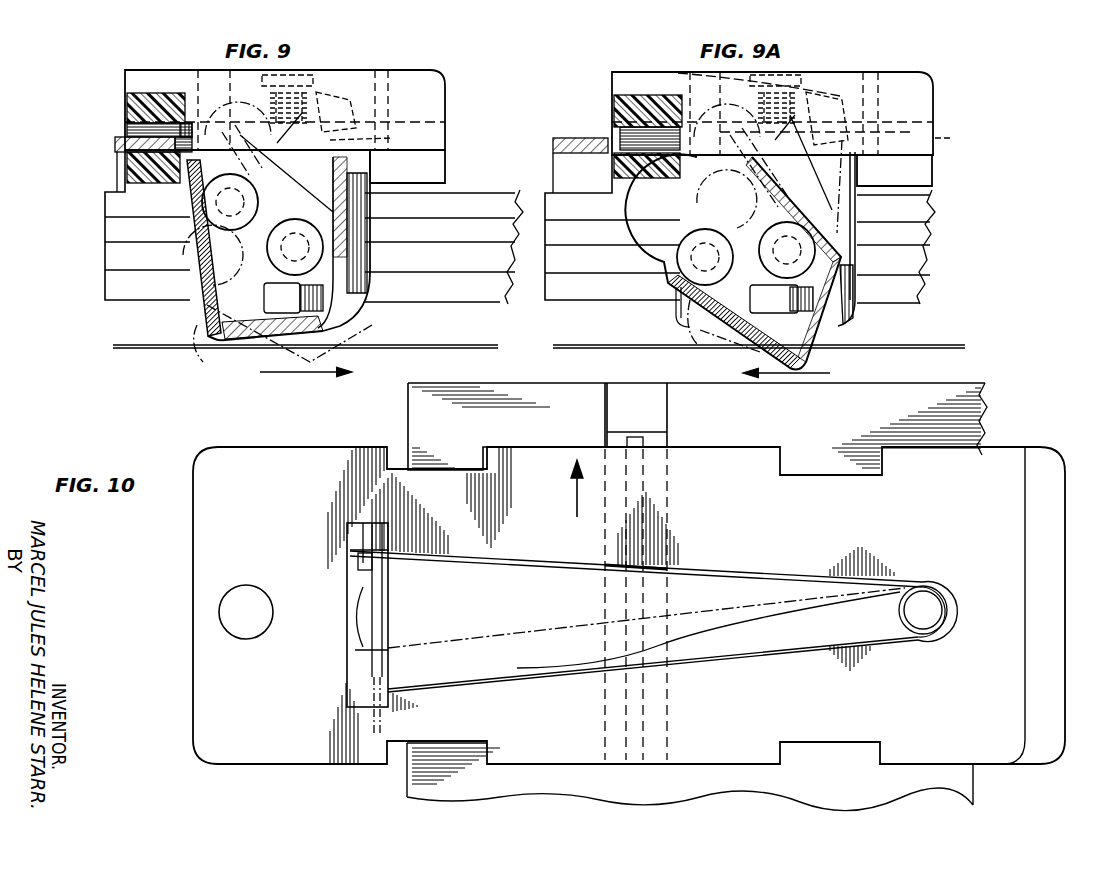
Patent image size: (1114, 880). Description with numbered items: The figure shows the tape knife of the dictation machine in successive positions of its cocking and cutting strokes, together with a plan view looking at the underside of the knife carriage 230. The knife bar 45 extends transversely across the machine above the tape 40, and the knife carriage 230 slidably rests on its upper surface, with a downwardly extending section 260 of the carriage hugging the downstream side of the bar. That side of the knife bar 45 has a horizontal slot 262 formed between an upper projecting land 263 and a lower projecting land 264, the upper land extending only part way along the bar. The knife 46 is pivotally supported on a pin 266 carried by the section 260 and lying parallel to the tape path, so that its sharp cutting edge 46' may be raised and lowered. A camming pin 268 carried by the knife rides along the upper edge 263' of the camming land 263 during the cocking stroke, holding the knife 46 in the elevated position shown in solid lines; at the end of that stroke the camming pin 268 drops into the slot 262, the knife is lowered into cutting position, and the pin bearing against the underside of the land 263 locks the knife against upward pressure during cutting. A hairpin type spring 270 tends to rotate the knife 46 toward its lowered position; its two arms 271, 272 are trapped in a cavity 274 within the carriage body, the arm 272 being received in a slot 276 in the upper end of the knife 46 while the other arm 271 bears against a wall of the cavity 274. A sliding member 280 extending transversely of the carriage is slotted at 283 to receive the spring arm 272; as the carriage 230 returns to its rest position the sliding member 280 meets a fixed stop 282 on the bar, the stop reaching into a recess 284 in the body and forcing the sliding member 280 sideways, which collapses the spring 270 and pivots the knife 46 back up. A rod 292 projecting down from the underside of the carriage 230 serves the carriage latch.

In FIG. 9, the tape 40 is at (378, 346).
In FIG. 9A, the tape 40 is at (622, 346).
In FIG. 10, the tape 40 is at (697, 597).
In FIG. 9, the knife bar 45 is at (115, 292).
In FIG. 9A, the knife bar 45 is at (612, 227).
In FIG. 9, the knife 46 is at (248, 226).
In FIG. 9A, the knife 46 is at (754, 242).
In FIG. 10, the knife 46 is at (388, 629).
In FIG. 9, the cutting edge 46' is at (283, 342).
In FIG. 9A, the cutting edge 46' is at (727, 339).
In FIG. 9, the knife carriage 230 is at (454, 90).
In FIG. 9A, the knife carriage 230 is at (940, 85).
In FIG. 10, the knife carriage 230 is at (746, 428).
In FIG. 9, the downwardly extending section 260 is at (362, 204).
In FIG. 9A, the downwardly extending section 260 is at (852, 168).
In FIG. 9A, the horizontal slot 262 is at (920, 256).
In FIG. 9, the upper projecting land 263 is at (448, 235).
In FIG. 9A, the upper projecting land 263 is at (923, 247).
In FIG. 9, the upper edge of camming land 263' is at (440, 206).
In FIG. 9, the lower projecting land 264 is at (473, 286).
In FIG. 9A, the lower projecting land 264 is at (918, 293).
In FIG. 9, the pin 266 is at (300, 247).
In FIG. 9A, the pin 266 is at (792, 250).
In FIG. 9, the camming pin 268 is at (244, 202).
In FIG. 9A, the camming pin 268 is at (692, 257).
In FIG. 9, the hairpin type spring 270 is at (353, 92).
In FIG. 9A, the hairpin type spring 270 is at (682, 73).
In FIG. 10, the hairpin type spring 270 is at (742, 582).
In FIG. 10, the spring arm 271 is at (778, 622).
In FIG. 10, the spring arm 272 is at (566, 566).
In FIG. 10, the cavity 274 is at (488, 684).
In FIG. 9, the slot 276 is at (380, 136).
In FIG. 9A, the slot 276 is at (610, 170).
In FIG. 9, the sliding member 280 is at (146, 127).
In FIG. 9A, the sliding member 280 is at (628, 135).
In FIG. 10, the sliding member 280 is at (630, 440).
In FIG. 9, the fixed stop 282 is at (115, 143).
In FIG. 9A, the fixed stop 282 is at (553, 140).
In FIG. 10, the slot 283 is at (630, 578).
In FIG. 9, the recess 284 is at (150, 150).
In FIG. 10, the rod 292 is at (250, 594).